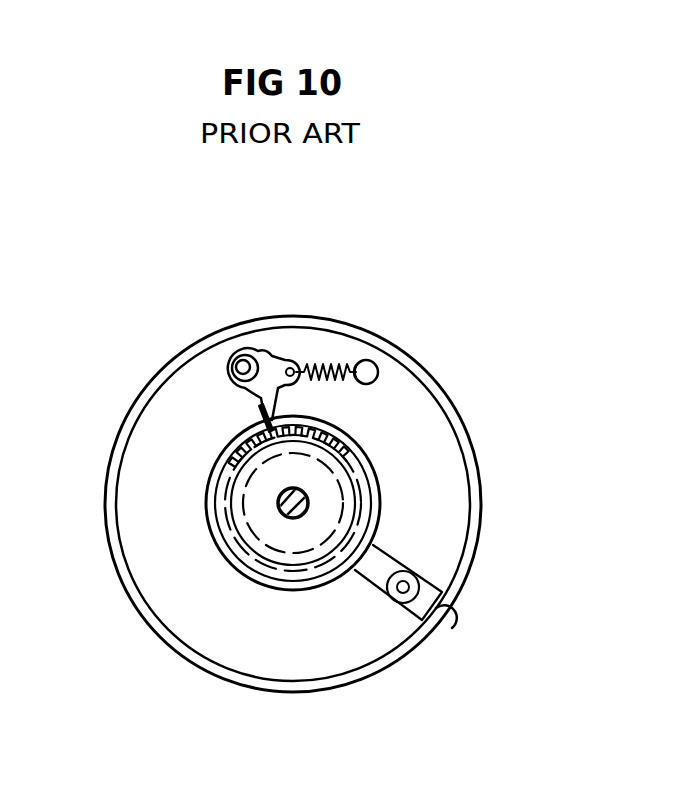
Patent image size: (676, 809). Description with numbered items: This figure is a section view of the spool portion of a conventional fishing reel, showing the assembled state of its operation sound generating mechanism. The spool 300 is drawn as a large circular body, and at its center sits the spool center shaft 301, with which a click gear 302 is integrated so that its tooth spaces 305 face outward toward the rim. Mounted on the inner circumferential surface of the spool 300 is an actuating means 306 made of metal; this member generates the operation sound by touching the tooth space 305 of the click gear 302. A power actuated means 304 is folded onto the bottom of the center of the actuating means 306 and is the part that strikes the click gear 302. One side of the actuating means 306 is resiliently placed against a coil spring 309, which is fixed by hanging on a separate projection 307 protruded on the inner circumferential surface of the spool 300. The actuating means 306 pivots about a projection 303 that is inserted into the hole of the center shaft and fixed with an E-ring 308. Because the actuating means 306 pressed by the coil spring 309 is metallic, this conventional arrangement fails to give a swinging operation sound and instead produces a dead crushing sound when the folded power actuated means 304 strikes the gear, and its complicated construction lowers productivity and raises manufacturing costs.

The spool 300 is at (440, 370).
The spool center shaft 301 is at (293, 518).
The click gear 302 is at (370, 503).
The projection 303 is at (240, 362).
The power actuated means 304 is at (258, 418).
The tooth space 305 is at (350, 438).
The actuating means 306 is at (249, 345).
The projection 307 is at (377, 360).
The E-ring 308 is at (237, 370).
The coil spring 309 is at (322, 358).